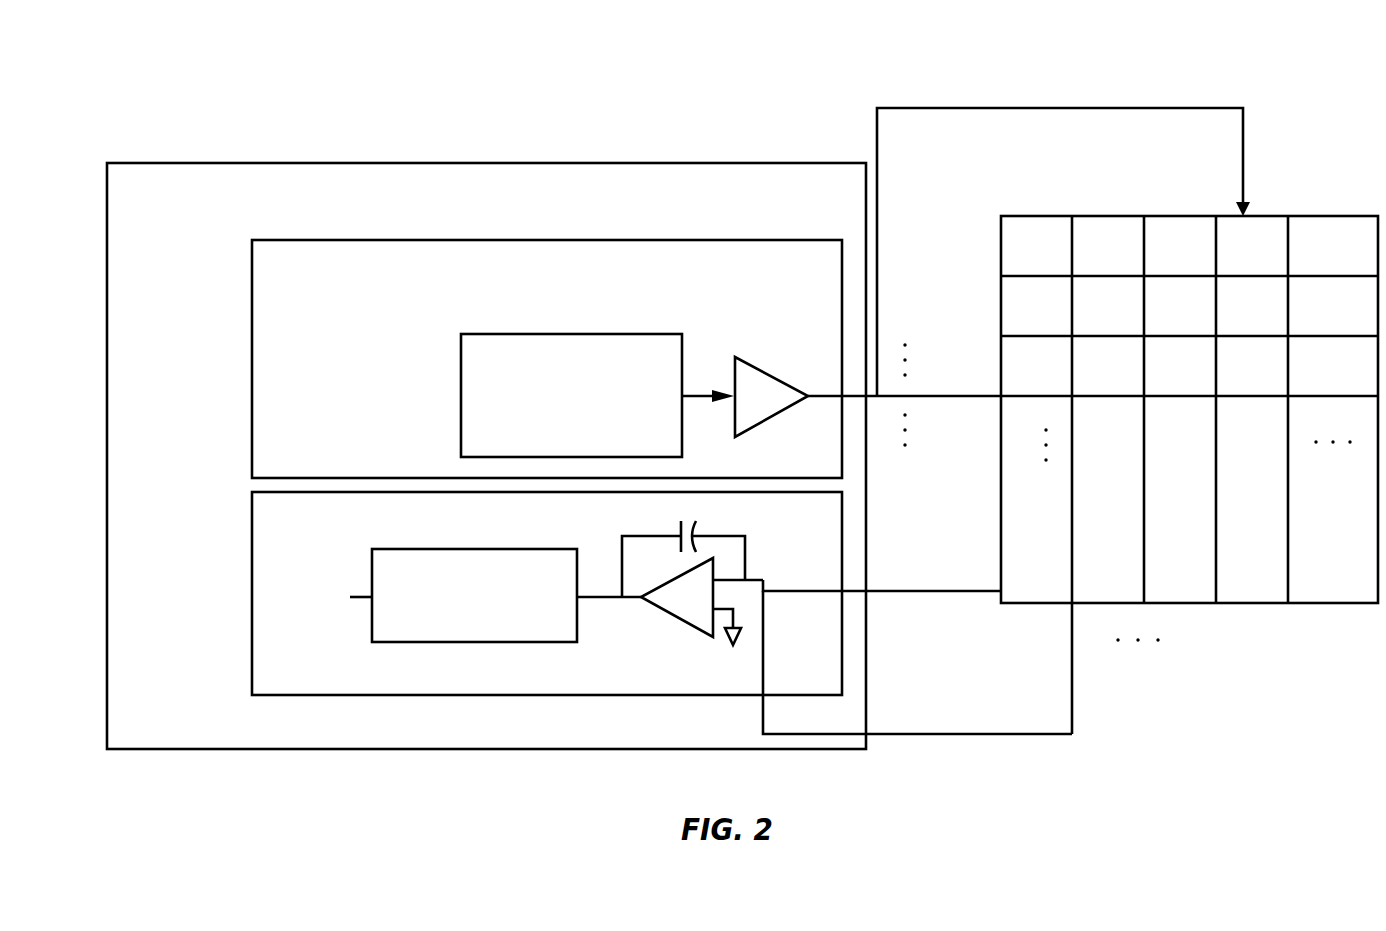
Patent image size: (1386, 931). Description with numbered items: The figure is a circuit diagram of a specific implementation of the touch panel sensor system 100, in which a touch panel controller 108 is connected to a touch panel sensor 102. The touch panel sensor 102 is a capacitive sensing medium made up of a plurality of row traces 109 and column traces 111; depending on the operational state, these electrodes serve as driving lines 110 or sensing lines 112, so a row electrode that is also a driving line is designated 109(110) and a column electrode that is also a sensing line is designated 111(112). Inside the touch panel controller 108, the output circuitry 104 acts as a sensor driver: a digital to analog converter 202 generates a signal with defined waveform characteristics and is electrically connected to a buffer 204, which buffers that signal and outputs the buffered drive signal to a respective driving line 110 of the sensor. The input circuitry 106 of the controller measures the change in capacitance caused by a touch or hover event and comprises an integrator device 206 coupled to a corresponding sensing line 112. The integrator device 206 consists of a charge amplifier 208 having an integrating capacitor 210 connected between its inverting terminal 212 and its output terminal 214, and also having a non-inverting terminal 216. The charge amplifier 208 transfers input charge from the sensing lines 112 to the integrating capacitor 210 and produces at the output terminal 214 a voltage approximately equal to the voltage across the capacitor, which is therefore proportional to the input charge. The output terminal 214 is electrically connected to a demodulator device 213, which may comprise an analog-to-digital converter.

The touch panel sensor system 100 is at (1090, 64).
The touch panel sensor 102 is at (1031, 207).
The output circuitry 104 is at (585, 304).
The input circuitry 106 is at (300, 574).
The touch panel controller 108 is at (252, 229).
The row traces 109 is at (1037, 395).
The driving lines 110 is at (985, 108).
The column traces 111 is at (1072, 582).
The sensing lines 112 is at (889, 590).
The digital to analog converter 202 is at (590, 447).
The buffer 204 is at (752, 362).
The integrator device 206 is at (652, 631).
The charge amplifier 208 is at (714, 560).
The integrating capacitor 210 is at (679, 528).
The inverting terminal 212 is at (714, 578).
The demodulator device 213 is at (456, 632).
The output terminal 214 is at (640, 594).
The non-inverting terminal 216 is at (713, 612).